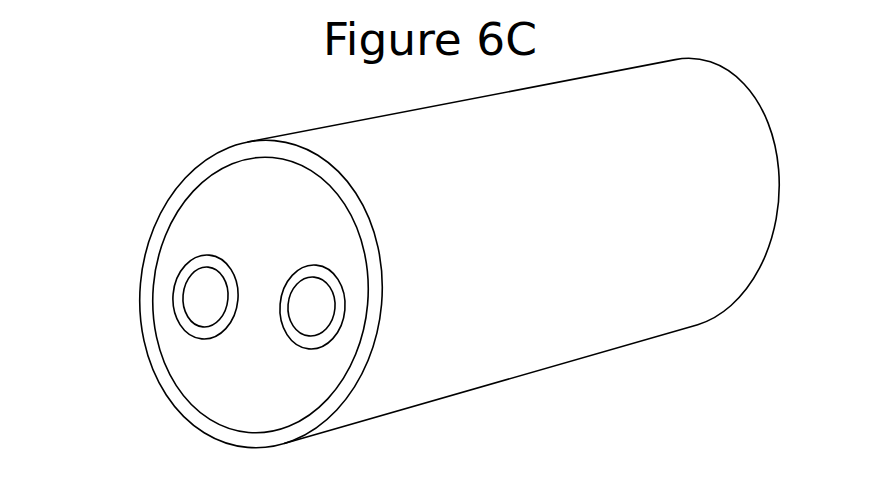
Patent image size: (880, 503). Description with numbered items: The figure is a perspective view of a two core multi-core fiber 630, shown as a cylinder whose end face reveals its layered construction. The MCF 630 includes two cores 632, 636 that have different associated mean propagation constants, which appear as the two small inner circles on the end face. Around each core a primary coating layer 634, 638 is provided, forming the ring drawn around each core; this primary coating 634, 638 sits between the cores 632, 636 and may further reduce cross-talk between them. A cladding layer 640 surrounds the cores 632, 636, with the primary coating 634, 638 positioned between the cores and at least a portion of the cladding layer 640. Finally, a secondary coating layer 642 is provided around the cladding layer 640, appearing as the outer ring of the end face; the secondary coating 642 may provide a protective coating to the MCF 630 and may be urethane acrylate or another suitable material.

The two core multi-core fiber 630 is at (218, 100).
The secondary coating layer 642 is at (207, 168).
The cladding layer 640 is at (195, 215).
The primary coating layer 634 is at (182, 267).
The core 632 is at (197, 299).
The primary coating layer 638 is at (298, 278).
The core 636 is at (313, 293).